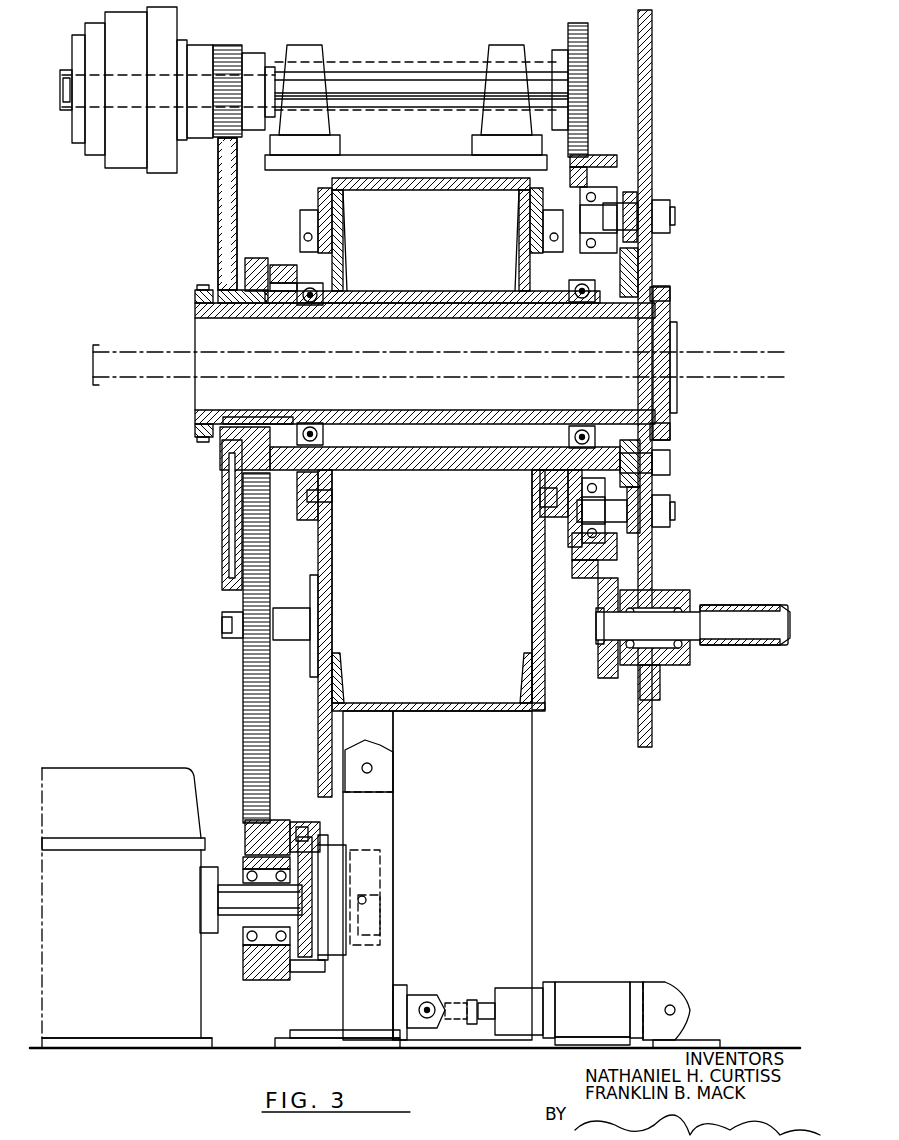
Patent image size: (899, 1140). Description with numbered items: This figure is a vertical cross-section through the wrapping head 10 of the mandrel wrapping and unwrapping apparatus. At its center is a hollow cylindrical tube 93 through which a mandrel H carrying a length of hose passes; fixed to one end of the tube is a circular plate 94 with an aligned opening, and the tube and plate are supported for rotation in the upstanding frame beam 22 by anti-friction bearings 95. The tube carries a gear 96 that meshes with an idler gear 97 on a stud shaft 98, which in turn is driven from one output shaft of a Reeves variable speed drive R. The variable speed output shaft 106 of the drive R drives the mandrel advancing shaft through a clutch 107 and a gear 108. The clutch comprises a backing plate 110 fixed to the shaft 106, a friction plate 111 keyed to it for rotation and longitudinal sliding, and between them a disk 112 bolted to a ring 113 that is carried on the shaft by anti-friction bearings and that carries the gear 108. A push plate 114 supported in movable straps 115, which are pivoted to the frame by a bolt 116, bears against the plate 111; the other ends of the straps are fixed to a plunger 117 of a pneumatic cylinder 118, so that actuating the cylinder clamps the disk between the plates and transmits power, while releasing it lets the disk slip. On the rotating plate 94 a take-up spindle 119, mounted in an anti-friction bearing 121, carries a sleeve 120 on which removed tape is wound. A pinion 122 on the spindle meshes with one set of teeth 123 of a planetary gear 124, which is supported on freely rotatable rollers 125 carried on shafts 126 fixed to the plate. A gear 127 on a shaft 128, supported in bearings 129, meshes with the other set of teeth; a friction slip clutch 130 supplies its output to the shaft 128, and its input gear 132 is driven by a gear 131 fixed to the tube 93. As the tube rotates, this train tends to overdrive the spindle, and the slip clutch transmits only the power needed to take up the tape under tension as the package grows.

The wrapping head 10 is at (196, 486).
The upstanding frame beam 22 is at (535, 778).
The hollow cylindrical tube 93 is at (207, 410).
The circular plate 94 is at (652, 118).
The anti-friction bearings 95 is at (312, 303).
The gear 96 is at (258, 258).
The idler gear 97 is at (268, 562).
The stud shaft 98 is at (290, 635).
The variable speed output shaft 106 is at (238, 905).
The clutch 107 is at (309, 797).
The gear 108 is at (262, 980).
The backing plate 110 is at (290, 955).
The friction plate 111 is at (328, 950).
The disk 112 is at (316, 957).
The ring 113 is at (252, 830).
The push plate 114 is at (340, 878).
The movable straps 115 is at (380, 812).
The bolt 116 is at (372, 768).
The plunger 117 is at (486, 1000).
The pneumatic cylinder 118 is at (600, 995).
The stud shaft or spindle 119 is at (720, 640).
The sleeve 120 is at (762, 645).
The anti-friction bearing 121 is at (690, 600).
The pinion 122 is at (603, 678).
The set of teeth 123 is at (610, 155).
The planetary gear 124 is at (572, 568).
The freely rotatable rollers 125 is at (615, 190).
The shafts 126 is at (676, 215).
The gear 127 is at (566, 32).
The shaft 128 is at (405, 78).
The bearings 129 is at (325, 72).
The friction slip clutch 130 is at (212, 35).
The gear 131 is at (218, 226).
The gear 132 is at (240, 45).
The mandrel H is at (750, 355).
The Reeves variable speed drive R is at (127, 780).